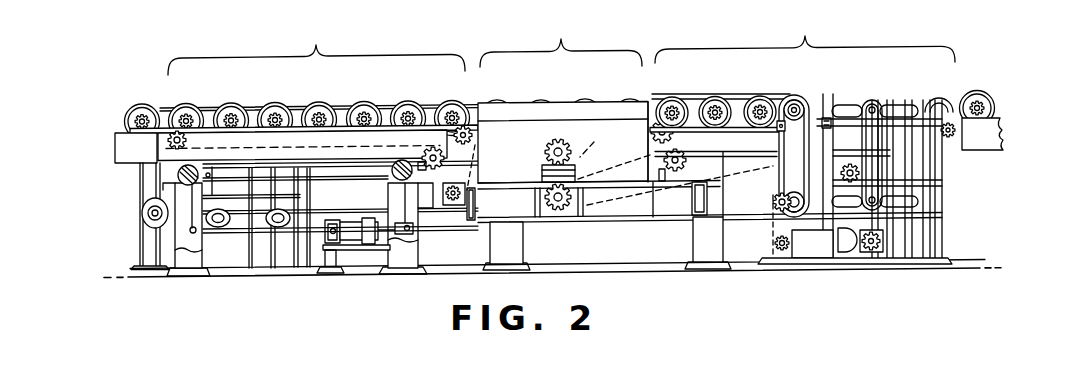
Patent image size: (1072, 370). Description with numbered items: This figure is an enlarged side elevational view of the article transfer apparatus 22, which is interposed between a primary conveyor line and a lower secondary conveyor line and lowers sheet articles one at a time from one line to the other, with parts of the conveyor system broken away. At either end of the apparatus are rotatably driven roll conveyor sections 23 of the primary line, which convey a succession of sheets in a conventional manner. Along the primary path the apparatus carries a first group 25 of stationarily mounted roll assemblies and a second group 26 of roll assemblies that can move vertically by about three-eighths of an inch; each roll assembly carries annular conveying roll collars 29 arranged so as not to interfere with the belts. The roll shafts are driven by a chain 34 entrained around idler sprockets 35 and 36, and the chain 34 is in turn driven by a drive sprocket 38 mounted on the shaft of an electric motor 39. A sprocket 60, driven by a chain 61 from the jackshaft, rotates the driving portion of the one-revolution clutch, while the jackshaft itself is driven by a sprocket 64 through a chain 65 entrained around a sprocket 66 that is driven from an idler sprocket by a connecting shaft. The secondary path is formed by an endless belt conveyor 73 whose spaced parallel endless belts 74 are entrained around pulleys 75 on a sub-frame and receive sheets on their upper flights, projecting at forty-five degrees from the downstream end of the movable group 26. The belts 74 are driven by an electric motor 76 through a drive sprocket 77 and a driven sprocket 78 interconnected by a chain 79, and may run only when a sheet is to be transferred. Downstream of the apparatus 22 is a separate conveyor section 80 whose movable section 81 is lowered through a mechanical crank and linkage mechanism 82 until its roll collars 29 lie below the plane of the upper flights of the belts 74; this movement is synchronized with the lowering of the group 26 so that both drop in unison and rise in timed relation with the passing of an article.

The article transfer apparatus 22 is at (650, 49).
The roll conveyor section 23 is at (115, 151).
The first group of roll assemblies 25 is at (805, 138).
The second group of roll assemblies 26 is at (563, 100).
The conveying roll collars 29 is at (268, 101).
The chain 34 is at (743, 175).
The idler sprocket 35 is at (951, 150).
The idler sprocket 36 is at (651, 139).
The drive sprocket 38 is at (868, 252).
The electric motor 39 is at (882, 250).
The sprocket 60 is at (546, 150).
The chain 61 is at (612, 151).
The sprocket 64 is at (548, 212).
The chain 65 is at (604, 202).
The sprocket 66 is at (687, 199).
The endless belt conveyor 73 is at (950, 196).
The endless belts 74 is at (797, 97).
The pulleys 75 is at (778, 132).
The electric motor 76 is at (808, 260).
The drive sprocket 77 is at (780, 252).
The driven sprocket 78 is at (777, 200).
The chain 79 is at (773, 230).
The conveyor section 80 is at (183, 290).
The movable section 81 is at (311, 92).
The mechanical crank and linkage mechanism 82 is at (234, 241).